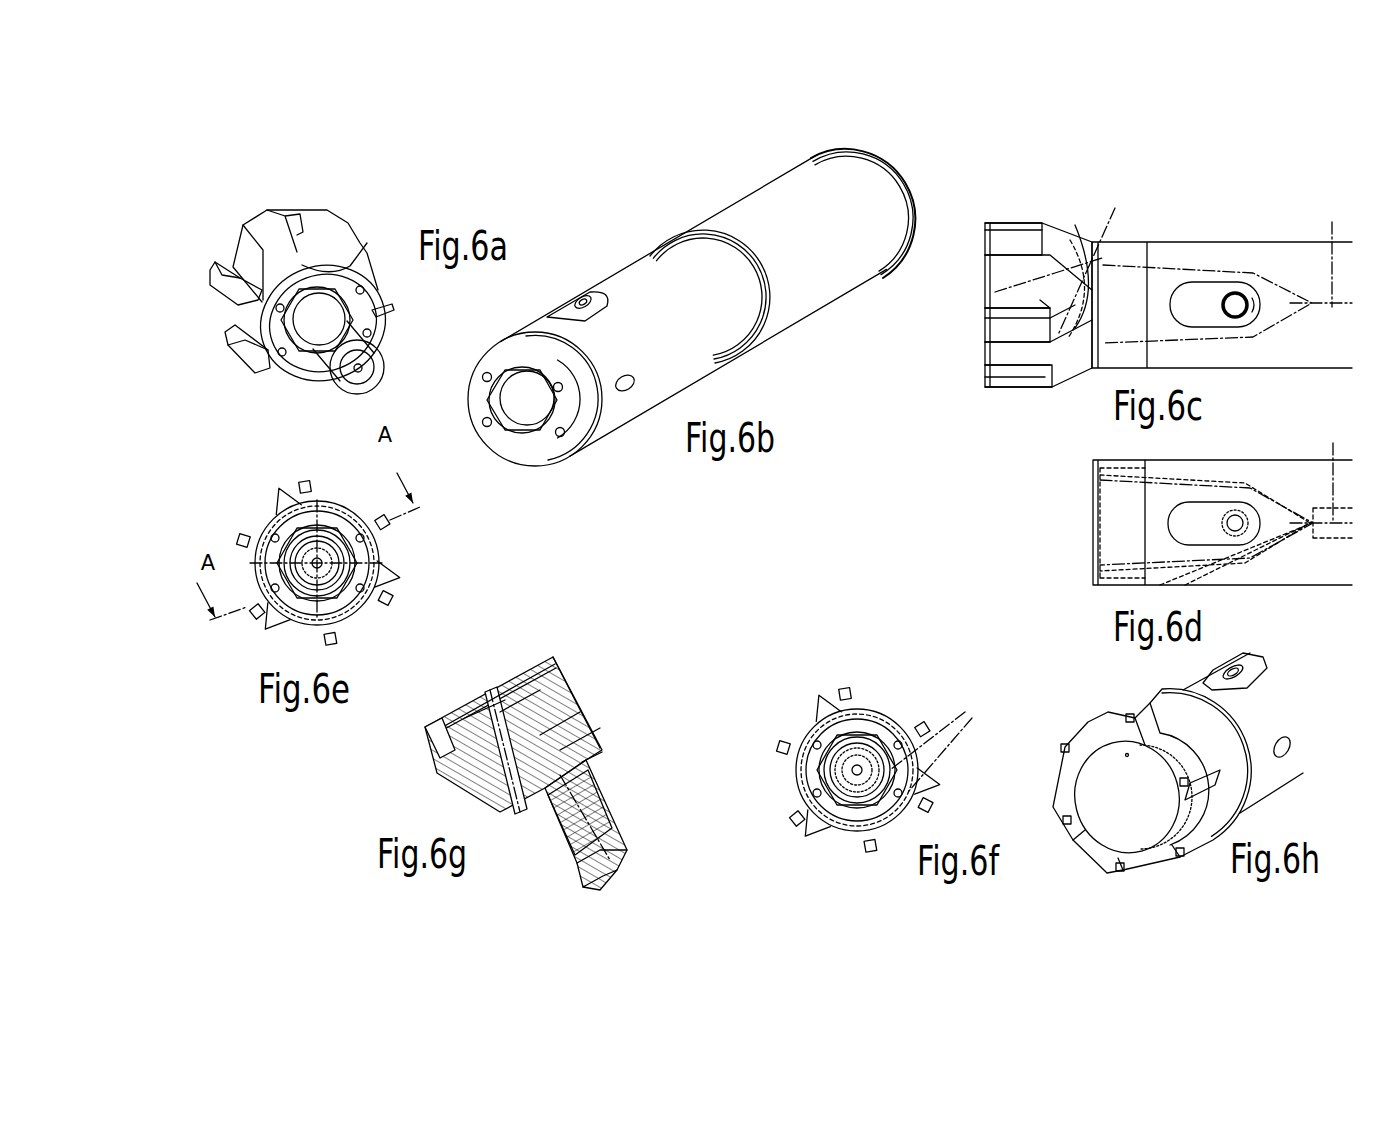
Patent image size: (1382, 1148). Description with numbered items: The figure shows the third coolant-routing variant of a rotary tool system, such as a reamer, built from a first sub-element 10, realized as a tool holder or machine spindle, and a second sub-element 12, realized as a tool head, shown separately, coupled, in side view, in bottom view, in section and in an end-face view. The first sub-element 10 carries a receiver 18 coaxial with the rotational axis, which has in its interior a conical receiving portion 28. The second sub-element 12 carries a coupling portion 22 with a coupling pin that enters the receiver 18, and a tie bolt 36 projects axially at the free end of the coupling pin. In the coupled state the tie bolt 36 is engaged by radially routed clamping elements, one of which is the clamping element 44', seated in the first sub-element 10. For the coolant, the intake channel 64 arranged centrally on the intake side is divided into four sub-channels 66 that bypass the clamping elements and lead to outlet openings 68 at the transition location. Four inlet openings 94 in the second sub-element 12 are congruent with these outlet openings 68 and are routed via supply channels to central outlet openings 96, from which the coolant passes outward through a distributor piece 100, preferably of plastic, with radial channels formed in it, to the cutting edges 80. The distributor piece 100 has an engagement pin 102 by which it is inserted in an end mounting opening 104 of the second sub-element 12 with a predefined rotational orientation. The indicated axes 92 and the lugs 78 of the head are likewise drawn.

In FIG. 6B, the first sub-element 10 is at (779, 205).
In FIG. 6C, the first sub-element 10 is at (1210, 258).
In FIG. 6D, the first sub-element 10 is at (1222, 522).
In FIG. 6H, the first sub-element 10 is at (1285, 700).
In FIG. 6A, the second sub-element 12 is at (312, 238).
In FIG. 6C, the second sub-element 12 is at (1052, 216).
In FIG. 6E, the second sub-element 12 is at (327, 510).
In FIG. 6F, the second sub-element 12 is at (857, 770).
In FIG. 6G, the second sub-element 12 is at (562, 688).
In FIG. 6H, the second sub-element 12 is at (1181, 745).
In FIG. 6B, the receiver 18 is at (521, 388).
In FIG. 6A, the coupling portion 22 is at (334, 312).
In FIG. 6G, the coupling portion 22 is at (603, 783).
In FIG. 6B, the conical receiving portion 28 is at (532, 432).
In FIG. 6A, the tie bolt 36 is at (372, 368).
In FIG. 6G, the tie bolt 36 is at (620, 866).
In FIG. 6C, the clamping element 44' is at (1235, 262).
In FIG. 6D, the clamping element 44' is at (1224, 476).
In FIG. 6H, the clamping element 44' is at (1235, 653).
In FIG. 6C, the intake channel 64 is at (1346, 251).
In FIG. 6D, the intake channel 64 is at (1336, 458).
In FIG. 6C, the sub-channels 66 is at (1168, 268).
In FIG. 6D, the sub-channels 66 is at (1180, 487).
In FIG. 6B, the outlet openings 68 is at (563, 438).
In FIG. 6C, the cutting blades 78 is at (1012, 390).
In FIG. 6E, the cutting blades 78 is at (265, 515).
In FIG. 6F, the cutting blades 78 is at (858, 750).
In FIG. 6E, the cutting edges 80 is at (238, 536).
In FIG. 6F, the cutting edges 80 is at (838, 760).
In FIG. 6G, the cutting edges 80 is at (438, 738).
In FIG. 6C, the axis 92 is at (1103, 235).
In FIG. 6F, the axis 92 is at (940, 741).
In FIG. 6G, the axis 92 is at (578, 740).
In FIG. 6A, the inlet openings 94 is at (383, 313).
In FIG. 6E, the inlet openings 94 is at (317, 563).
In FIG. 6F, the inlet openings 94 is at (857, 700).
In FIG. 6G, the inlet openings 94 is at (598, 752).
In FIG. 6G, the central outlet openings 96 is at (512, 680).
In FIG. 6G, the distributor piece 100 is at (519, 668).
In FIG. 6H, the distributor piece 100 is at (1110, 805).
In FIG. 6G, the engagement pin 102 is at (530, 668).
In FIG. 6G, the end mounting opening 104 is at (555, 722).